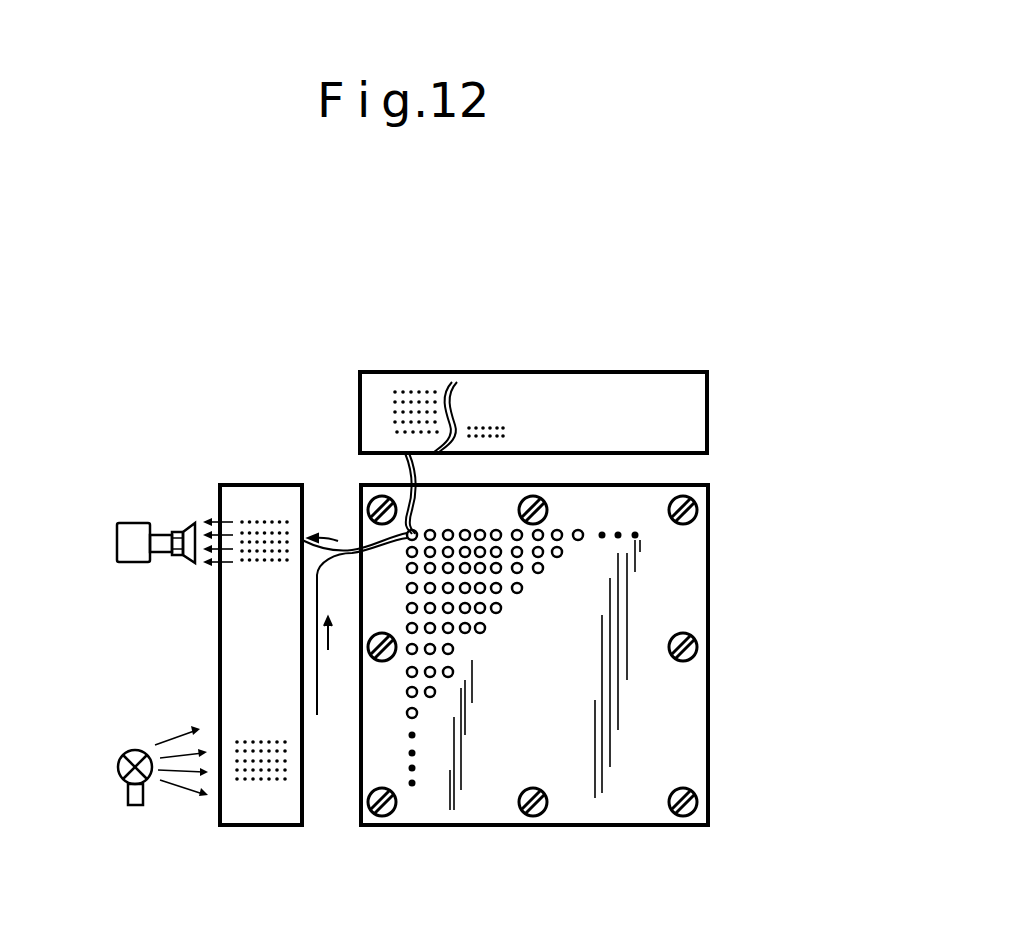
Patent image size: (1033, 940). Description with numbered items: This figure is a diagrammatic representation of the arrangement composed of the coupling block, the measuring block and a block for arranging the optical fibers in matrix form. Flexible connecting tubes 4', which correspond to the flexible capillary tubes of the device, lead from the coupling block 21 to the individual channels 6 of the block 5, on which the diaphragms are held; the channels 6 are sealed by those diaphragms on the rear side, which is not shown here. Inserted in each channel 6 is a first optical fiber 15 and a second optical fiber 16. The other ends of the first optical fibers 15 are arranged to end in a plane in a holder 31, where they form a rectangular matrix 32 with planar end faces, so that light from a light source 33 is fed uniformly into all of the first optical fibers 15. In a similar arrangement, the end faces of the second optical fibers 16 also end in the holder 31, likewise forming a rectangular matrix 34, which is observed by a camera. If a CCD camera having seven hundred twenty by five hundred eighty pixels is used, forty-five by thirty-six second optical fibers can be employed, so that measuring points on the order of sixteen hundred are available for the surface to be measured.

The flexible connecting tube 4' is at (445, 418).
The block 5 is at (708, 622).
The channel 6 is at (450, 533).
The first optical fiber 15 is at (317, 715).
The second optical fiber 16 is at (352, 548).
The coupling block 21 is at (707, 403).
The holder 31 is at (253, 815).
The rectangular matrix 32 is at (258, 770).
The light source 33 is at (132, 750).
The rectangular matrix 34 is at (130, 562).